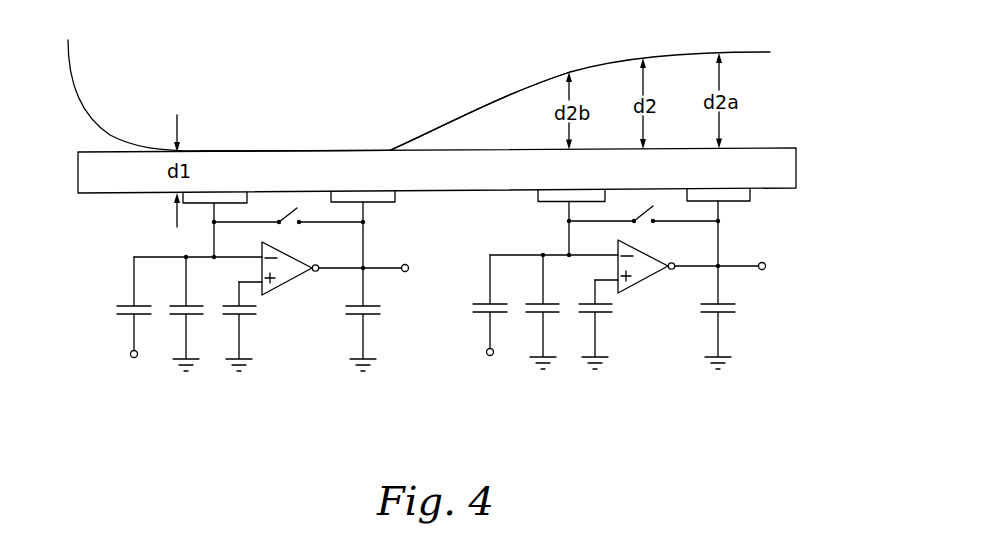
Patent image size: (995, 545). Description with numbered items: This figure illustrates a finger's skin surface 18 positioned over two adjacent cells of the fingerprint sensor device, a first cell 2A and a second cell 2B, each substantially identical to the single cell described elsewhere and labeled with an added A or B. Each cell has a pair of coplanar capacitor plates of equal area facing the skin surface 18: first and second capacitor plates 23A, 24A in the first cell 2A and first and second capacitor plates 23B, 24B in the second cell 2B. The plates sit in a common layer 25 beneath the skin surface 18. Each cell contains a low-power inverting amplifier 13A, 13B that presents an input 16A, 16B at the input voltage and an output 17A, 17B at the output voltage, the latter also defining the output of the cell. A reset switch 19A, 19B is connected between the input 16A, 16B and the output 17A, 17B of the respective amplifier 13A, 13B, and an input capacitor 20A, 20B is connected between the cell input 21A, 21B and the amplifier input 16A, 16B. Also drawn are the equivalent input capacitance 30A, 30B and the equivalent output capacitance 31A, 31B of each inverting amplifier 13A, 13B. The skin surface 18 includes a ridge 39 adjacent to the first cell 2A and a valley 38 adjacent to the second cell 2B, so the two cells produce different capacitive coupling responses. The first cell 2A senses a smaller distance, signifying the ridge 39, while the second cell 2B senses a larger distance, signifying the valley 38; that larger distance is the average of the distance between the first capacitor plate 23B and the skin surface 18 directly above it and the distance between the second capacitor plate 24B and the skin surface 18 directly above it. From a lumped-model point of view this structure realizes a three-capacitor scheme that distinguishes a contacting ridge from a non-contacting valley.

The first cell 2A is at (82, 338).
The second cell 2B is at (559, 410).
The inverting amplifier 13A is at (300, 282).
The inverting amplifier 13B is at (657, 280).
The input 16A is at (185, 256).
The input 16B is at (542, 254).
The output 17A is at (390, 272).
The output 17B is at (746, 270).
The skin surface 18 is at (483, 107).
The reset switch 19A is at (290, 219).
The reset switch 19B is at (645, 217).
The input capacitor 20A is at (121, 306).
The input capacitor 20B is at (474, 304).
The input 21A is at (131, 357).
The input 21B is at (487, 355).
The first capacitor plate 23A is at (395, 198).
The first capacitor plate 23B is at (750, 199).
The second capacitor plate 24A is at (250, 194).
The second capacitor plate 24B is at (606, 192).
The dielectric layer 25 is at (774, 148).
The equivalent input capacitance 30A is at (204, 318).
The equivalent input capacitance 30B is at (561, 316).
The equivalent output capacitance 31A is at (381, 318).
The equivalent output capacitance 31B is at (737, 316).
The valley 38 is at (751, 38).
The ridge 39 is at (291, 143).